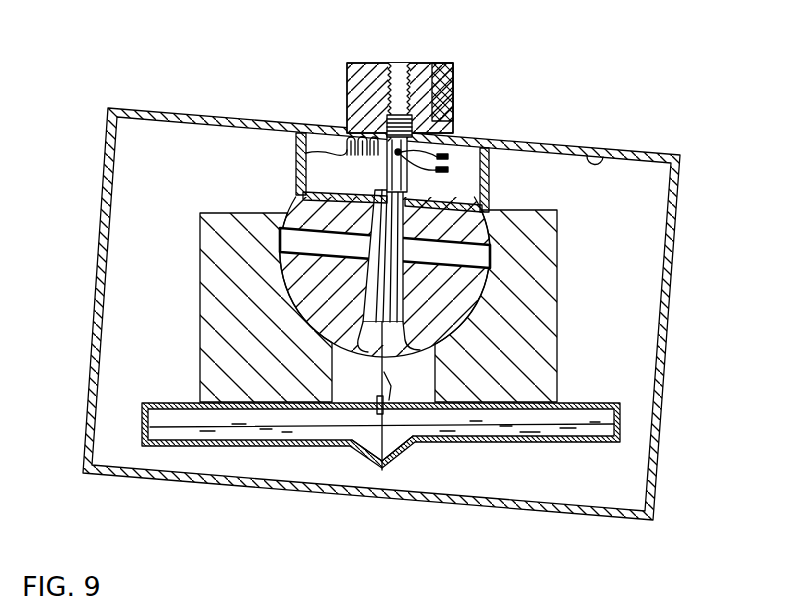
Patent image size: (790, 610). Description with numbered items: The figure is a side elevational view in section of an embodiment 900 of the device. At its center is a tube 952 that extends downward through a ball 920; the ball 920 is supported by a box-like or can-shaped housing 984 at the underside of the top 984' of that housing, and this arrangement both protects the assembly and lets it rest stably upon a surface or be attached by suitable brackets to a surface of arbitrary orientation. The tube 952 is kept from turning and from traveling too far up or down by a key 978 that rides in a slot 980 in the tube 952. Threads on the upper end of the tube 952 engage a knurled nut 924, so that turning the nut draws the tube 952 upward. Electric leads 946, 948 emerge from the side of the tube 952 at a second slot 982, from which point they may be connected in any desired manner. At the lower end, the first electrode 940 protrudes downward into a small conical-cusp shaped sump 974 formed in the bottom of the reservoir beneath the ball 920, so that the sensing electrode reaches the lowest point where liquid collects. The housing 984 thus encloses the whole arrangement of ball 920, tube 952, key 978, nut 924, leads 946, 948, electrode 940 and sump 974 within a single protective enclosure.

The embodiment 900 is at (587, 85).
The ball 920 is at (490, 215).
The knurled nut 924 is at (350, 62).
The first electrode 940 is at (364, 445).
The electric lead 946 is at (446, 153).
The electric lead 948 is at (448, 170).
The tube 952 is at (297, 205).
The sump 974 is at (395, 458).
The key 978 is at (298, 147).
The slot 980 is at (387, 170).
The slot 982 is at (403, 179).
The housing 984 is at (418, 314).
The top of the housing 984' is at (633, 139).